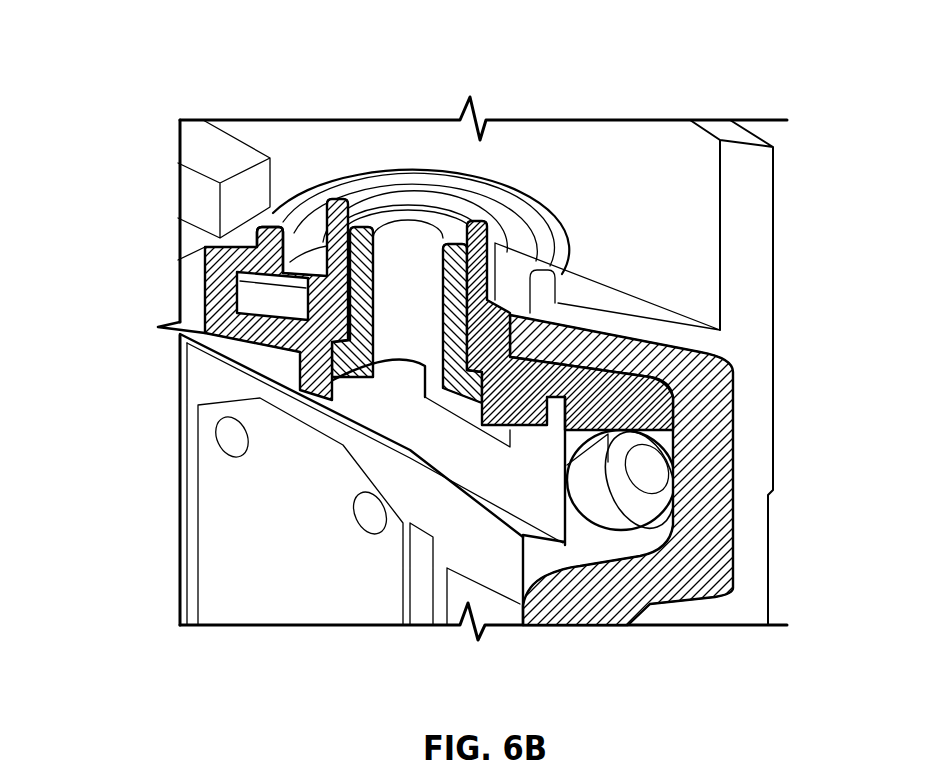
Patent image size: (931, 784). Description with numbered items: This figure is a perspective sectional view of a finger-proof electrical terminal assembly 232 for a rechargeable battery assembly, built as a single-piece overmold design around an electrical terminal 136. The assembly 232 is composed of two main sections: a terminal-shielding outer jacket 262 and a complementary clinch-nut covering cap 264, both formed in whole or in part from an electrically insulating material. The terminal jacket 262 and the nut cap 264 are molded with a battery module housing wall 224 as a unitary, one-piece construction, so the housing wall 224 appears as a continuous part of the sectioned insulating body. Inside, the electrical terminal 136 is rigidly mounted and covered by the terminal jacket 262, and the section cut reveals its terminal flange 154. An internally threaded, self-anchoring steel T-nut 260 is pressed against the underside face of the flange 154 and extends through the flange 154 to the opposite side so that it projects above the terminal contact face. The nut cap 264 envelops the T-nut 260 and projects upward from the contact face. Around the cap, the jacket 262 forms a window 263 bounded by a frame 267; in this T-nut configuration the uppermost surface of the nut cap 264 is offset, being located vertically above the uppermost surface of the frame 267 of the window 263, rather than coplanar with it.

The electrical terminal 136 is at (733, 435).
The terminal flange 154 is at (583, 330).
The battery module housing wall 224 is at (178, 587).
The finger-proof electrical terminal assembly 232 is at (158, 228).
The T-nut 260 is at (423, 207).
The terminal-shielding outer jacket 262 is at (385, 247).
The window 263 is at (317, 172).
The clinch-nut covering cap 264 is at (370, 176).
The frame 267 is at (285, 220).